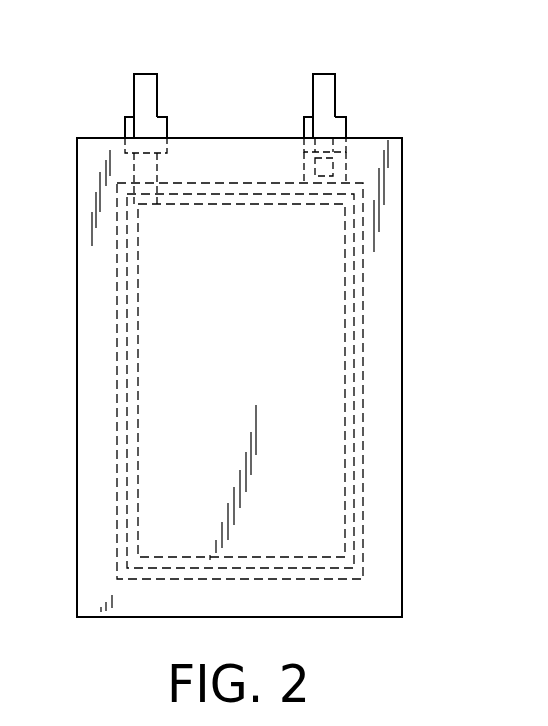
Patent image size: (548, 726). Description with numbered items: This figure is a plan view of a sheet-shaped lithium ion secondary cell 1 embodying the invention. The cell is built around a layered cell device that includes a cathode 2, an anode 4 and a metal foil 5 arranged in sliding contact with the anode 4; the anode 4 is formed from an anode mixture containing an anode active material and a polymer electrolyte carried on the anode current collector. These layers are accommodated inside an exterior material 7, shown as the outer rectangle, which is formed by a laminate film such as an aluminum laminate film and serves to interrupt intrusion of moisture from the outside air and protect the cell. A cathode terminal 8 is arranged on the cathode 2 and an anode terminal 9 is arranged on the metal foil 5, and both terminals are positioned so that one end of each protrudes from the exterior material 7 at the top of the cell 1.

The sheet-shaped lithium ion secondary cell 1 is at (263, 62).
The cathode 2 is at (345, 402).
The anode 4 is at (354, 355).
The metal foil 5 is at (363, 308).
The exterior material 7 is at (388, 248).
The cathode terminal 8 is at (328, 95).
The anode terminal 9 is at (145, 98).